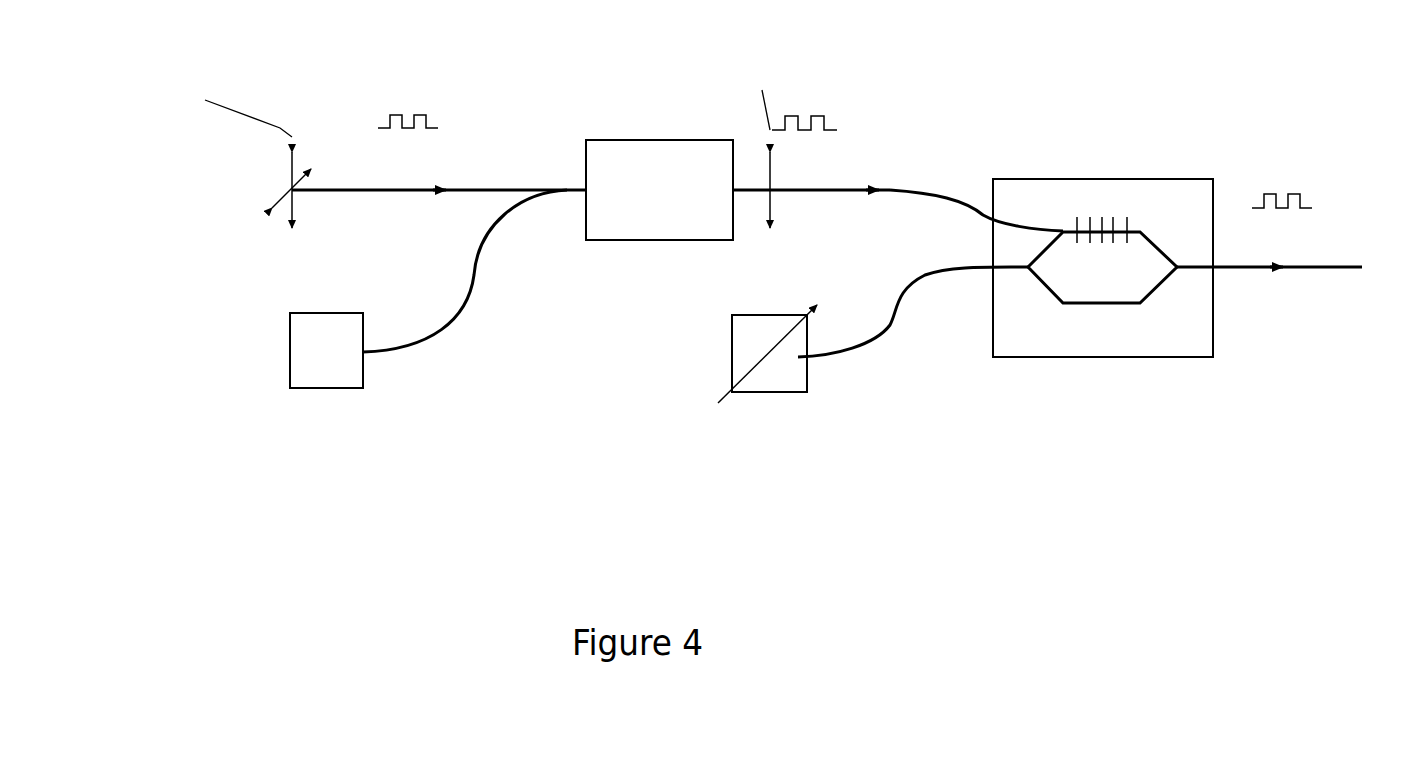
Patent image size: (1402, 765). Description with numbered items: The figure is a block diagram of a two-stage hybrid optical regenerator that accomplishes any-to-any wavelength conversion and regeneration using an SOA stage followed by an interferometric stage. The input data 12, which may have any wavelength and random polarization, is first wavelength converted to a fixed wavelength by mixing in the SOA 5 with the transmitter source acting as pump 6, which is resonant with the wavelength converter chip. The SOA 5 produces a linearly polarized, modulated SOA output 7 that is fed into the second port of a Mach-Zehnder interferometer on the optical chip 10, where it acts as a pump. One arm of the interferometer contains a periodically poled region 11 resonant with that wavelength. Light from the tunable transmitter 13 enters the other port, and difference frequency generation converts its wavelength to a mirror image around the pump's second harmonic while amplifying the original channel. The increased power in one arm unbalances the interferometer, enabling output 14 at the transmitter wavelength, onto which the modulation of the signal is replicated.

The SOA 5 is at (658, 140).
The pump 6 is at (392, 295).
The SOA output 7 is at (881, 128).
The optical chip 10 is at (1100, 178).
The periodically poled region 11 is at (1063, 232).
The input data 12 is at (364, 129).
The tunable transmitter 13 is at (807, 362).
The output 14 is at (1284, 206).